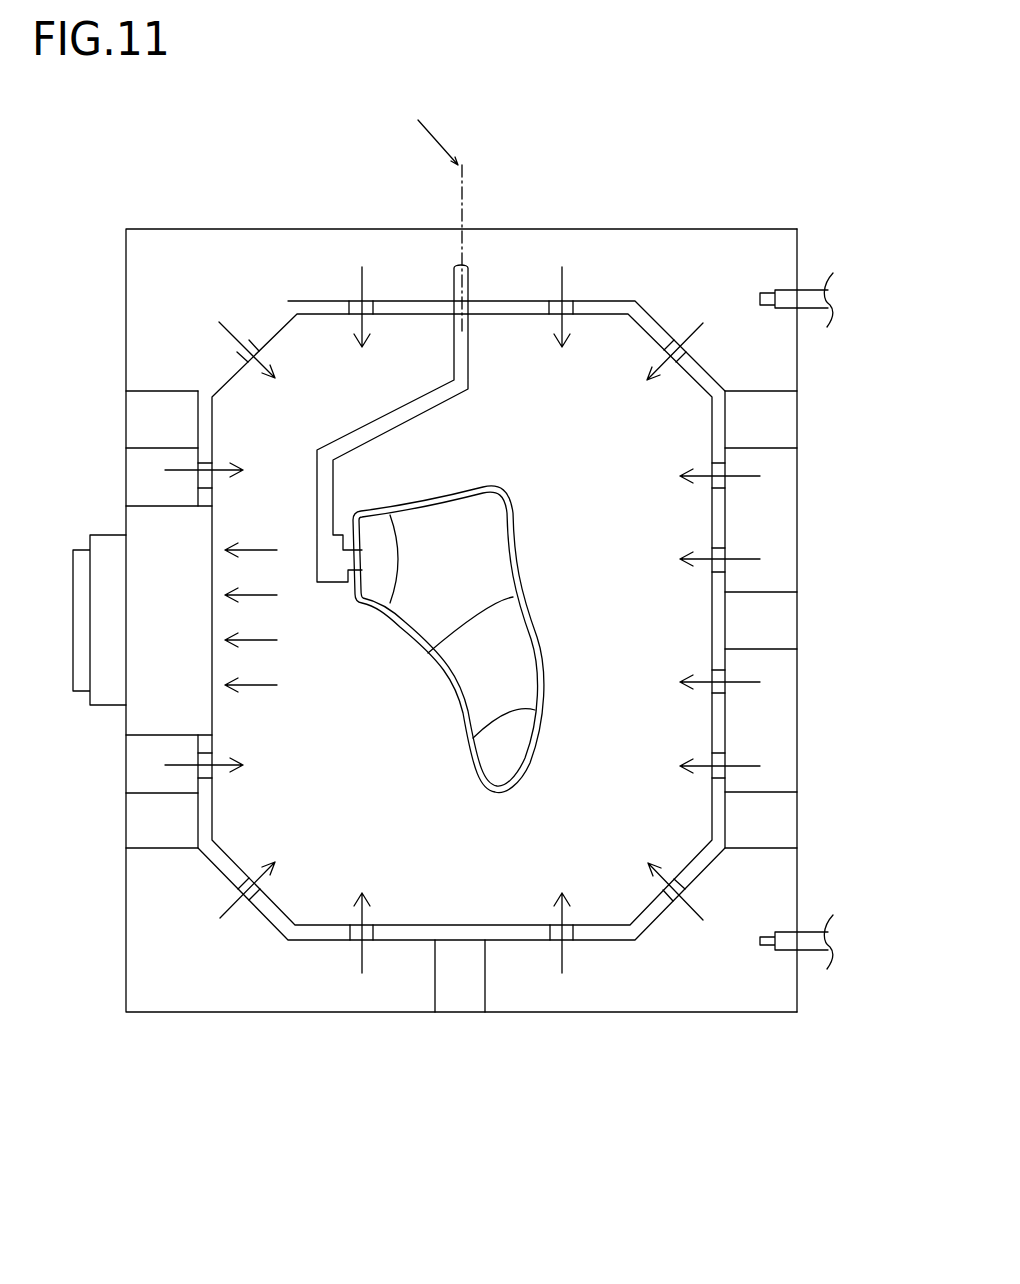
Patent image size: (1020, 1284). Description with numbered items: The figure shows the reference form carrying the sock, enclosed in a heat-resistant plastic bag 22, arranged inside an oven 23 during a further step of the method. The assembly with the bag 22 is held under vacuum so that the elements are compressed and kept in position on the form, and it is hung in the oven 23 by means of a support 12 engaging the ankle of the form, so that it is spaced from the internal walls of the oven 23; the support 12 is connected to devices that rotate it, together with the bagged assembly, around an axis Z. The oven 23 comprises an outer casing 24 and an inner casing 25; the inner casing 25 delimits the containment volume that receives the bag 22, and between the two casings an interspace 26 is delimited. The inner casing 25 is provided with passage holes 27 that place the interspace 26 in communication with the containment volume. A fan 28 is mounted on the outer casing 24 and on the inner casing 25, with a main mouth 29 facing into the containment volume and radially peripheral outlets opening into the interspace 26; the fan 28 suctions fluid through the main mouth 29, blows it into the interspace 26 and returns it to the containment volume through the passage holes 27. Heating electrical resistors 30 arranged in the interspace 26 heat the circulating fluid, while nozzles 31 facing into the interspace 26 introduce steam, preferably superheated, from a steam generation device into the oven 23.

The support 12 is at (468, 343).
The heat-resistant plastic bag 22 is at (530, 613).
The oven 23 is at (771, 187).
The outer casing 24 is at (800, 467).
The inner casing 25 is at (727, 530).
The interspace 26 is at (233, 273).
The passage holes 27 is at (345, 305).
The fan 28 is at (150, 740).
The main mouth 29 is at (213, 537).
The heating electrical resistors 30 is at (160, 418).
The nozzles 31 is at (793, 297).